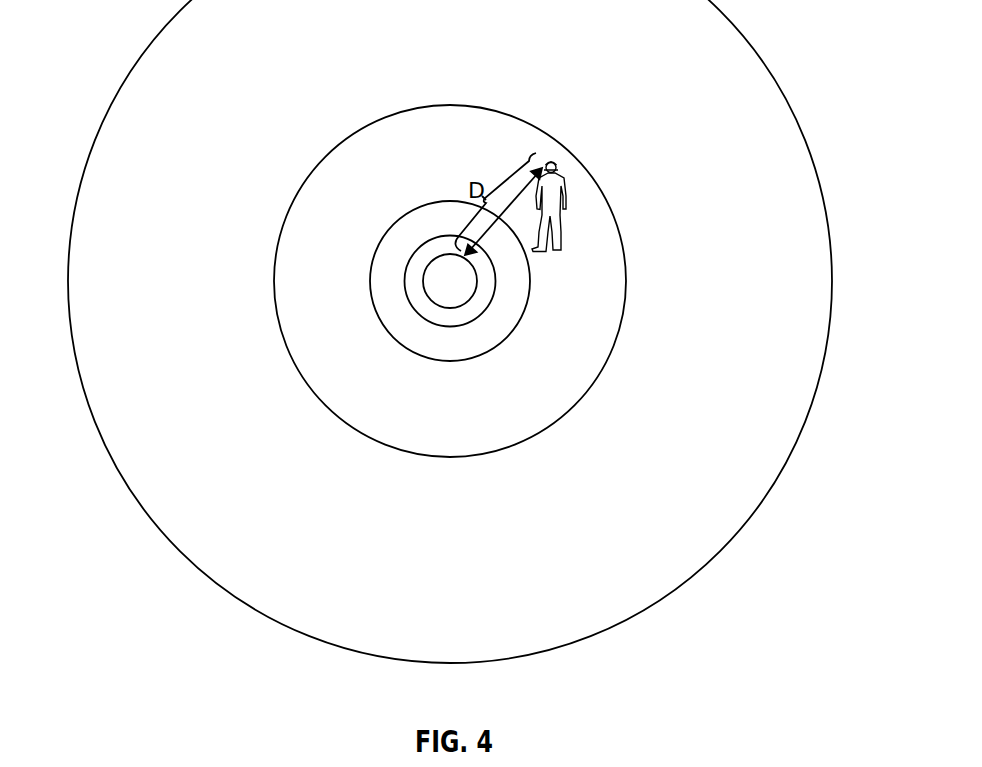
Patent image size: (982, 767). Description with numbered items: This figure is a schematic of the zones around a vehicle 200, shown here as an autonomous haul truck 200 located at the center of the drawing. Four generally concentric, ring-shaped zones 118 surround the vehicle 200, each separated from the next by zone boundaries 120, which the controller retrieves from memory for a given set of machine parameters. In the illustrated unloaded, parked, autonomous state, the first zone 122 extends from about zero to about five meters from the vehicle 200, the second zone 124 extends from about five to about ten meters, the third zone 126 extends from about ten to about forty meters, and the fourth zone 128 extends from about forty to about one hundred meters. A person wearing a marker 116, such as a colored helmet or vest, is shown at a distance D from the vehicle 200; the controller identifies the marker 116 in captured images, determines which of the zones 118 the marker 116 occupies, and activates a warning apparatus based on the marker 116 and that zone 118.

The marker 116 is at (553, 162).
The zones 118 is at (133, 128).
The zone boundaries 120 is at (427, 267).
The first zone 122 is at (452, 315).
The second zone 124 is at (472, 352).
The third zone 126 is at (472, 420).
The fourth zone 128 is at (472, 571).
The vehicle 200 is at (468, 290).